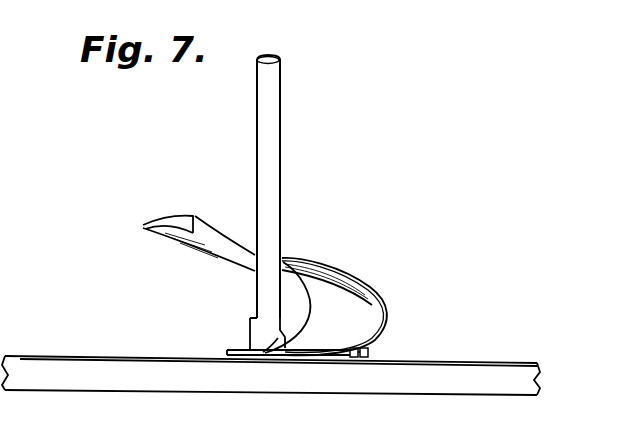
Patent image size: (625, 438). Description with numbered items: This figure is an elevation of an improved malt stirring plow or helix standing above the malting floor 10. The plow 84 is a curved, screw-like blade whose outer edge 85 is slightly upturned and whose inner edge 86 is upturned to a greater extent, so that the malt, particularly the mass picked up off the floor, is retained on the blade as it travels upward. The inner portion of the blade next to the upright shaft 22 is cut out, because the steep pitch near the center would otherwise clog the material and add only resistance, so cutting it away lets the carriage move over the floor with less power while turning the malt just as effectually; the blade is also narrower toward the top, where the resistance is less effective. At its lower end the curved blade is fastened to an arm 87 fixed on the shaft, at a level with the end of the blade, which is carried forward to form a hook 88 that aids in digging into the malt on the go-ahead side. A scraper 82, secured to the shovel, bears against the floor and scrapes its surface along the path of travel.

The malting floor 10 is at (408, 363).
The upright rod 22 is at (281, 178).
The scraper 82 is at (363, 348).
The stirring plow 84 is at (211, 257).
The outer edge 85 is at (385, 292).
The inner edge 86 is at (322, 265).
The arm 87 is at (262, 353).
The hook 88 is at (231, 351).